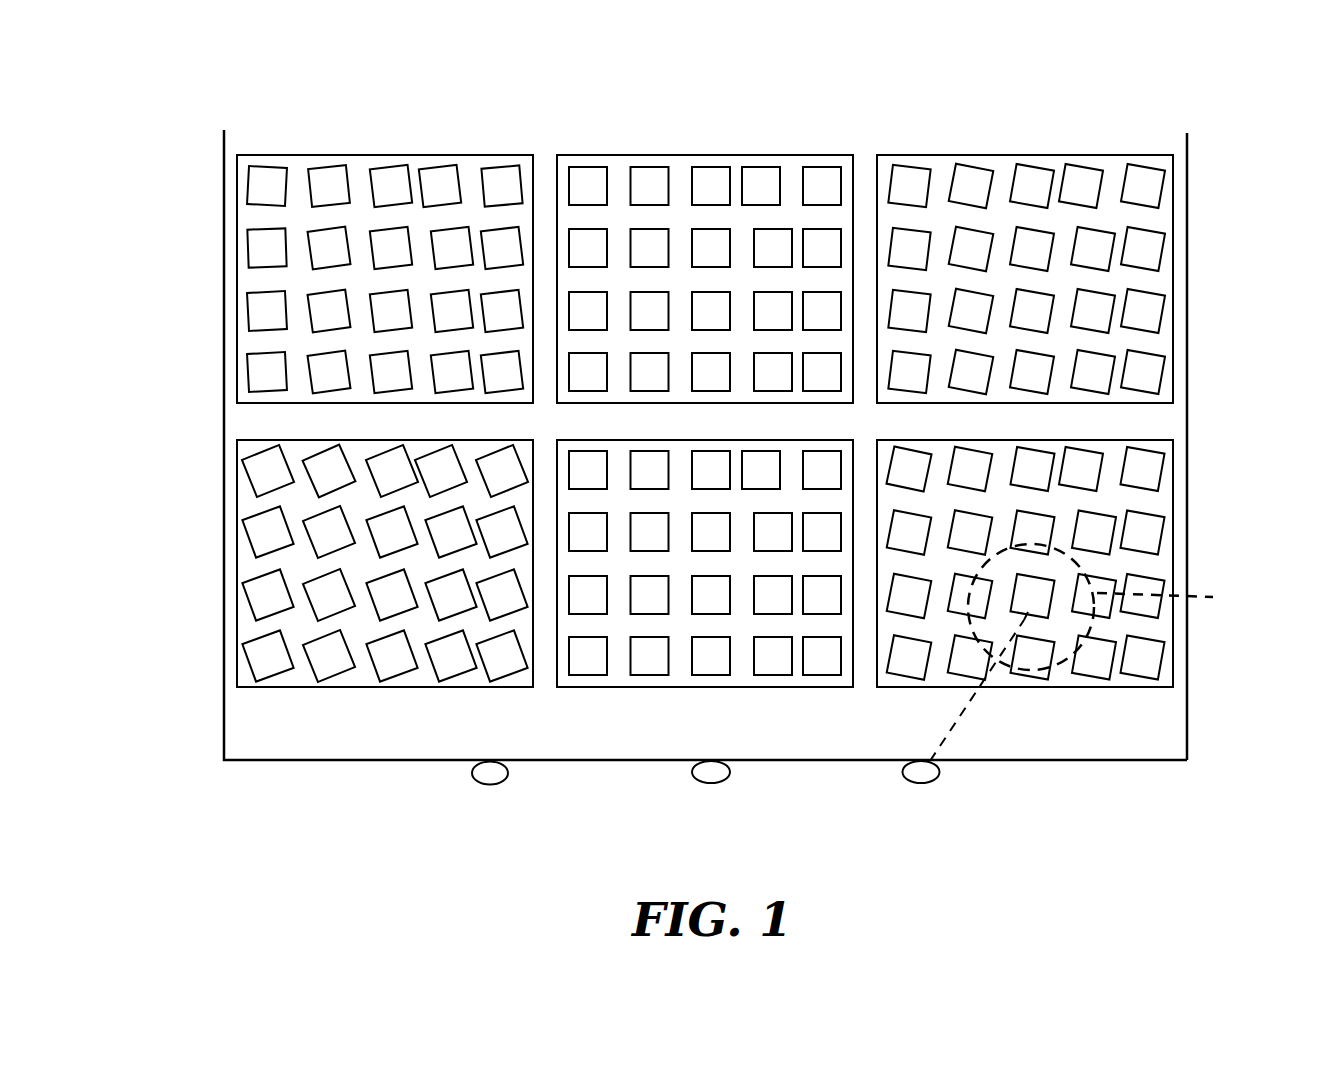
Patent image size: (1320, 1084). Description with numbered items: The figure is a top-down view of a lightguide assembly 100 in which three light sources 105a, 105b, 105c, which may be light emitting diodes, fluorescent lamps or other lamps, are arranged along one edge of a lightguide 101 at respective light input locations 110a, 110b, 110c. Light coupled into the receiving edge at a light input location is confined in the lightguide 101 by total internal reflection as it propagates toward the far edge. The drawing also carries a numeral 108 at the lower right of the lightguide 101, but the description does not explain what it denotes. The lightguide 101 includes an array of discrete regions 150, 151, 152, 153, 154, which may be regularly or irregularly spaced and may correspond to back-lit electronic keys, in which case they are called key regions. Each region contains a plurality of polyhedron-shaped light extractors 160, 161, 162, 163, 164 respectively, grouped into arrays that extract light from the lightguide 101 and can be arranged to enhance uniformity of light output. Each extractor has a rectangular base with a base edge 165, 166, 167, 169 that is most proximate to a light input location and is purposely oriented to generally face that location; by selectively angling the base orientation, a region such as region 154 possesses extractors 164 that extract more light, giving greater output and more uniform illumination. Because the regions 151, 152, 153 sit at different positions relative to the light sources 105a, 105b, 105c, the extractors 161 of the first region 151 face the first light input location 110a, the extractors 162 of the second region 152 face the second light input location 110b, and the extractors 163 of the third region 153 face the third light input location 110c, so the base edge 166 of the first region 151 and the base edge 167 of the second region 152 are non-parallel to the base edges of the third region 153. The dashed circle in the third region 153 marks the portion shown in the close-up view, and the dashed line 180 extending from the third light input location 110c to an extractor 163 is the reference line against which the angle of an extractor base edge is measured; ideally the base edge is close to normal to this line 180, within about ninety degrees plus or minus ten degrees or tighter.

The lightguide assembly 100 is at (262, 104).
The lightguide 101 is at (792, 742).
The light source 105a is at (488, 785).
The light source 105b is at (712, 783).
The light source 105c is at (922, 783).
The frame 108 is at (1142, 762).
The light input location 110a is at (482, 762).
The light input location 110b is at (697, 761).
The light input location 110c is at (930, 761).
The discrete region 150 is at (249, 278).
The first region 151 is at (248, 502).
The second region 152 is at (622, 668).
The third region 153 is at (1162, 565).
The region 154 is at (1158, 216).
The light extractor 160 is at (260, 317).
The light extractor 161 is at (260, 598).
The light extractor 162 is at (587, 658).
The light extractor 163 is at (1143, 463).
The light extractor 164 is at (1150, 311).
The base edge 165 is at (333, 388).
The base edge 166 is at (272, 673).
The base edge 167 is at (820, 675).
The base edge 169 is at (1133, 328).
The line 180 is at (957, 725).